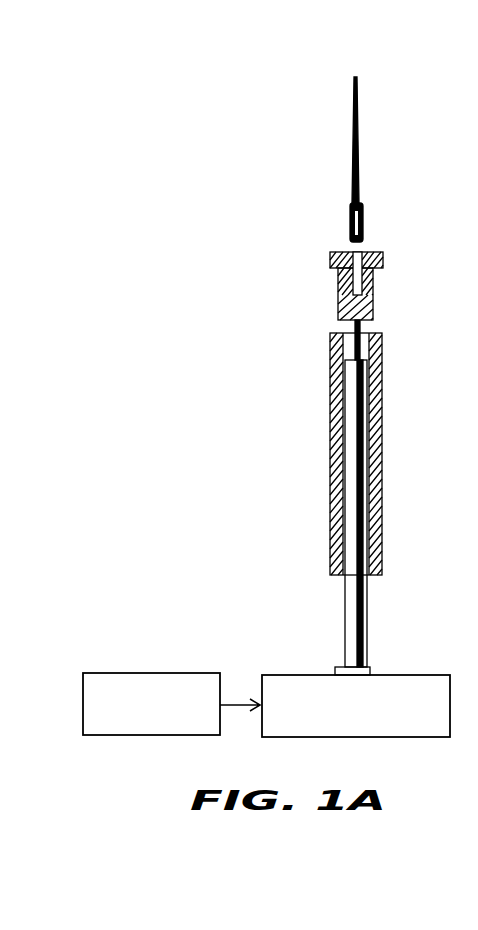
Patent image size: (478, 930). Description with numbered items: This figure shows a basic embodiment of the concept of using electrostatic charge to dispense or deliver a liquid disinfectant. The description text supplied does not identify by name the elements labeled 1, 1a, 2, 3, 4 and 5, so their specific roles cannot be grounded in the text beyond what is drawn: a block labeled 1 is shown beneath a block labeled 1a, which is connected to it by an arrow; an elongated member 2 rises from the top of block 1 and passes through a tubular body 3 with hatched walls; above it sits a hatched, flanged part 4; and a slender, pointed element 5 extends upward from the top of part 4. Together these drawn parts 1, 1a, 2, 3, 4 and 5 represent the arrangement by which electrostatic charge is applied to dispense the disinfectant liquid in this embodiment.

The power supply 1 is at (396, 675).
The voltage control 1a is at (176, 673).
The tube / conductor 2 is at (343, 590).
The insulating cylinder 3 is at (330, 415).
The holder 4 is at (338, 280).
The needle 5 is at (350, 217).